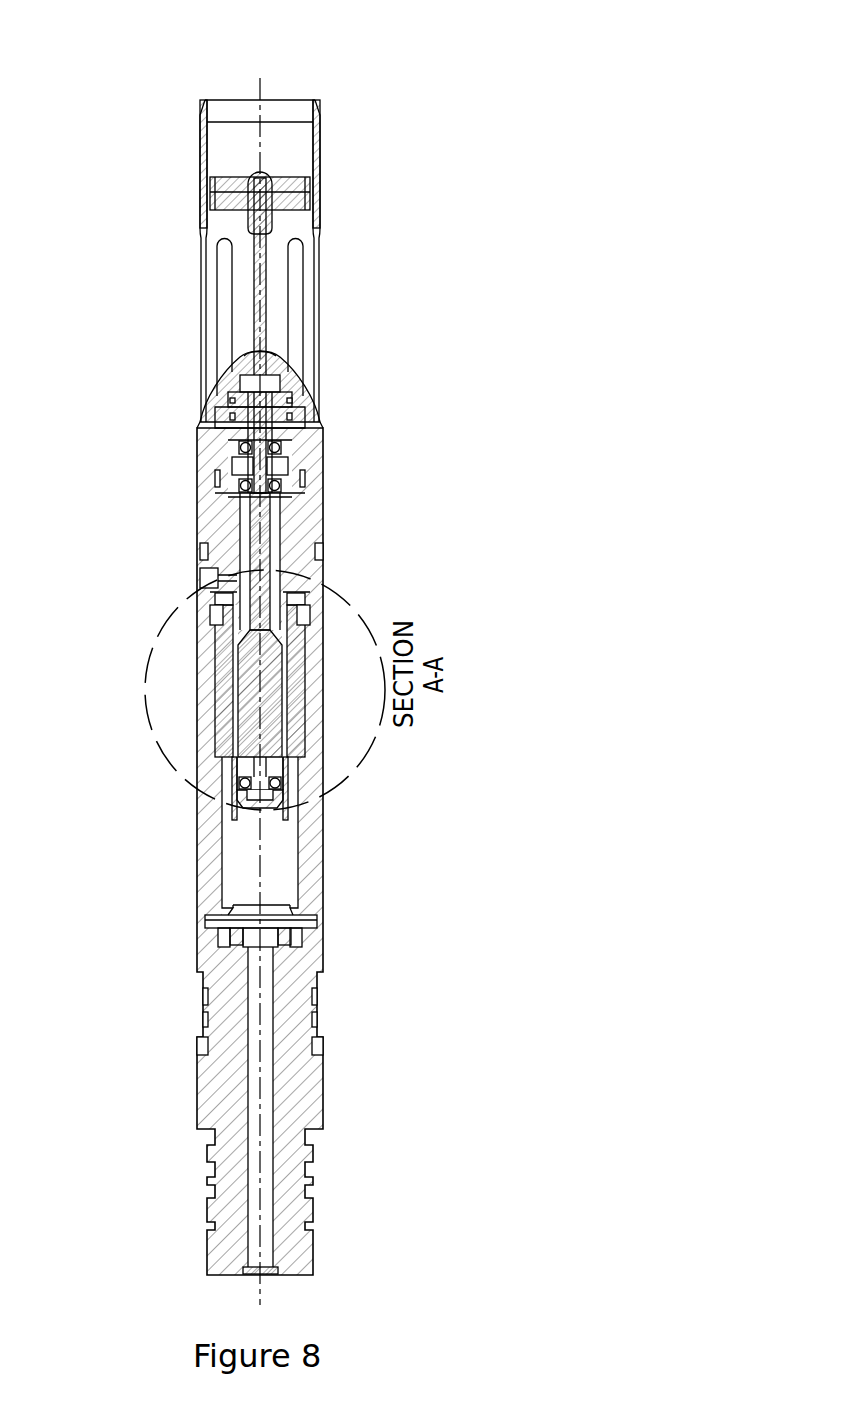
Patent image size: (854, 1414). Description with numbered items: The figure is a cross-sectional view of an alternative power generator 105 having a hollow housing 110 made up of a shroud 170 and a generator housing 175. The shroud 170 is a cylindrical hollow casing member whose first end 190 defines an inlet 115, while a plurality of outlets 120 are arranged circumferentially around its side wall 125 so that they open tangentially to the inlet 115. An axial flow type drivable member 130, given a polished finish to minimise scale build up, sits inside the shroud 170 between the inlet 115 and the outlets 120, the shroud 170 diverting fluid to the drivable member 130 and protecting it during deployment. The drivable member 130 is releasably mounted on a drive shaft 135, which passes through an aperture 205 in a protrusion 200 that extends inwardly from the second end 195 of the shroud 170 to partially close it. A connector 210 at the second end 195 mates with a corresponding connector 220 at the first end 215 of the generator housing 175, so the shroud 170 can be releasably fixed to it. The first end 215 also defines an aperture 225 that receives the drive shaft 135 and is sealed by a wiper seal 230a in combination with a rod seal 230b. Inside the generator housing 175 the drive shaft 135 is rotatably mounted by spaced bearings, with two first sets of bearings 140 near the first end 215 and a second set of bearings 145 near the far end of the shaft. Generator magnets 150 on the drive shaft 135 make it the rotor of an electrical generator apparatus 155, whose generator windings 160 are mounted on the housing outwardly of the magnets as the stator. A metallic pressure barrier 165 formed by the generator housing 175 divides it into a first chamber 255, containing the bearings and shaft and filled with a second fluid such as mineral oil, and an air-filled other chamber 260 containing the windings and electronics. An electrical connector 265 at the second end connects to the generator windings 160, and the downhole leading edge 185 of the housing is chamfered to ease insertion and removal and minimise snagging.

The power generator 105 is at (345, 138).
The hollow housing 110 is at (319, 215).
The inlet 115 is at (299, 106).
The outlets 120 is at (207, 298).
The side wall 125 is at (199, 144).
The drivable member 130 is at (200, 188).
The drive shaft 135 is at (262, 273).
The first set of bearings 140 is at (312, 488).
The second set of bearings 145 is at (241, 787).
The generator magnets 150 is at (253, 676).
The electrical generator apparatus 155 is at (318, 736).
The generator windings 160 is at (227, 653).
The pressure barrier 165 is at (217, 604).
The shroud 170 is at (198, 214).
The generator housing 175 is at (318, 857).
The downhole leading edge 185 is at (335, 1088).
The first end of the shroud 190 is at (203, 100).
The second end of the shroud 195 is at (320, 518).
The protrusion 200 is at (230, 368).
The aperture 205 is at (260, 349).
The connector 210 is at (208, 500).
The first end of the generator housing 215 is at (284, 396).
The connector 220 is at (203, 530).
The aperture 225 is at (278, 404).
The wiper seal 230a is at (232, 408).
The rod seal 230b is at (296, 418).
The first chamber 255 is at (277, 552).
The other chamber 260 is at (237, 860).
The electrical connector 265 is at (265, 918).